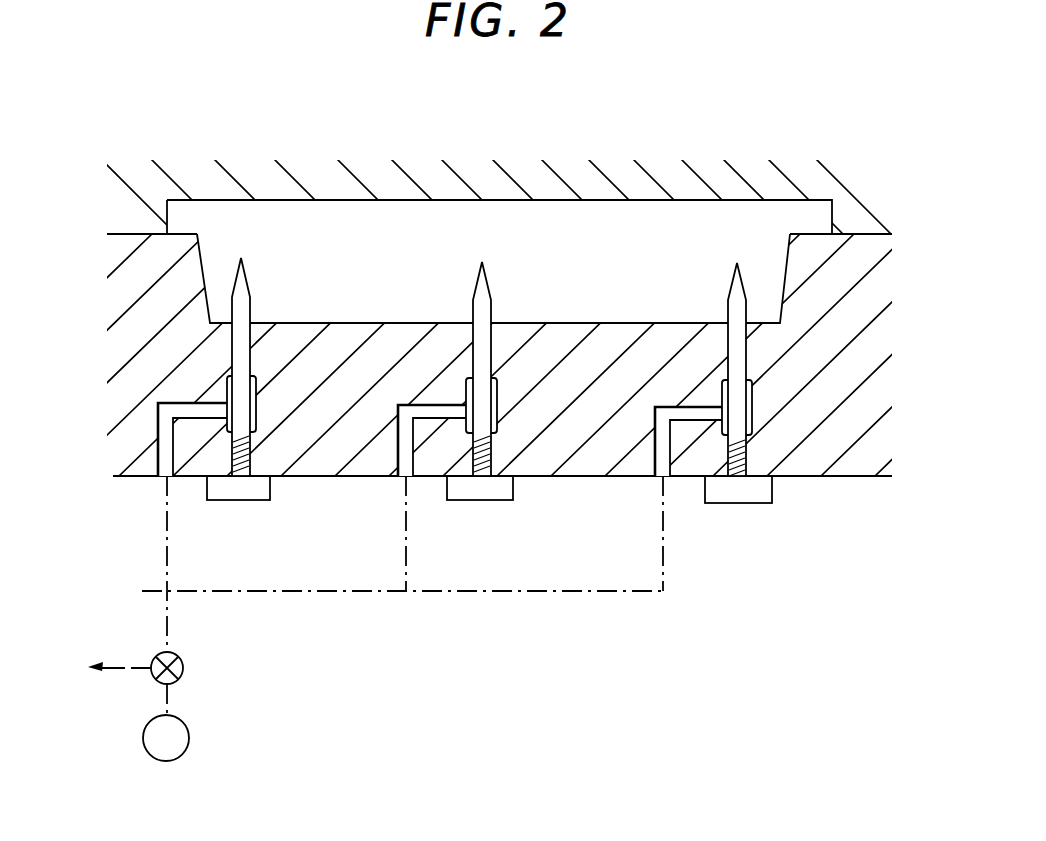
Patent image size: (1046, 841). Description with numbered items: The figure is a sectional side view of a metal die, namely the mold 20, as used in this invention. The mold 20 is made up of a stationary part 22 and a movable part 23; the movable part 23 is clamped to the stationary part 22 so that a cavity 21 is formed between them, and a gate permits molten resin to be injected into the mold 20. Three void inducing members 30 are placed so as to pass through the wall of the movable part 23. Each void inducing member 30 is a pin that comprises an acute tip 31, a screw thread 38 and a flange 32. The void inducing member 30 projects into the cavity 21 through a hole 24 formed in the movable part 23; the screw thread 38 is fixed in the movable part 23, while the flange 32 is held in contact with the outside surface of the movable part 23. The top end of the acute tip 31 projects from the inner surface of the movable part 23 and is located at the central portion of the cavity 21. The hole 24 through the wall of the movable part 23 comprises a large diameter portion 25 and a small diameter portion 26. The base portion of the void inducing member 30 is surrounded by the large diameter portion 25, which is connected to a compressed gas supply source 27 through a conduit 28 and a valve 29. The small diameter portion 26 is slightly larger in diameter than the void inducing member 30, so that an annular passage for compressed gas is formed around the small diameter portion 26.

The mold 20 is at (523, 400).
The cavity 21 is at (499, 261).
The stationary part 22 is at (601, 182).
The movable part 23 is at (855, 418).
The hole 24 is at (258, 423).
The large diameter portion 25 is at (747, 413).
The small diameter portion 26 is at (747, 352).
The compressed gas supply source 27 is at (190, 732).
The conduit 28 is at (695, 422).
The valve 29 is at (185, 668).
The void inducing member 30 is at (262, 302).
The acute tip 31 is at (244, 280).
The flange 32 is at (490, 502).
The screw thread 38 is at (247, 462).